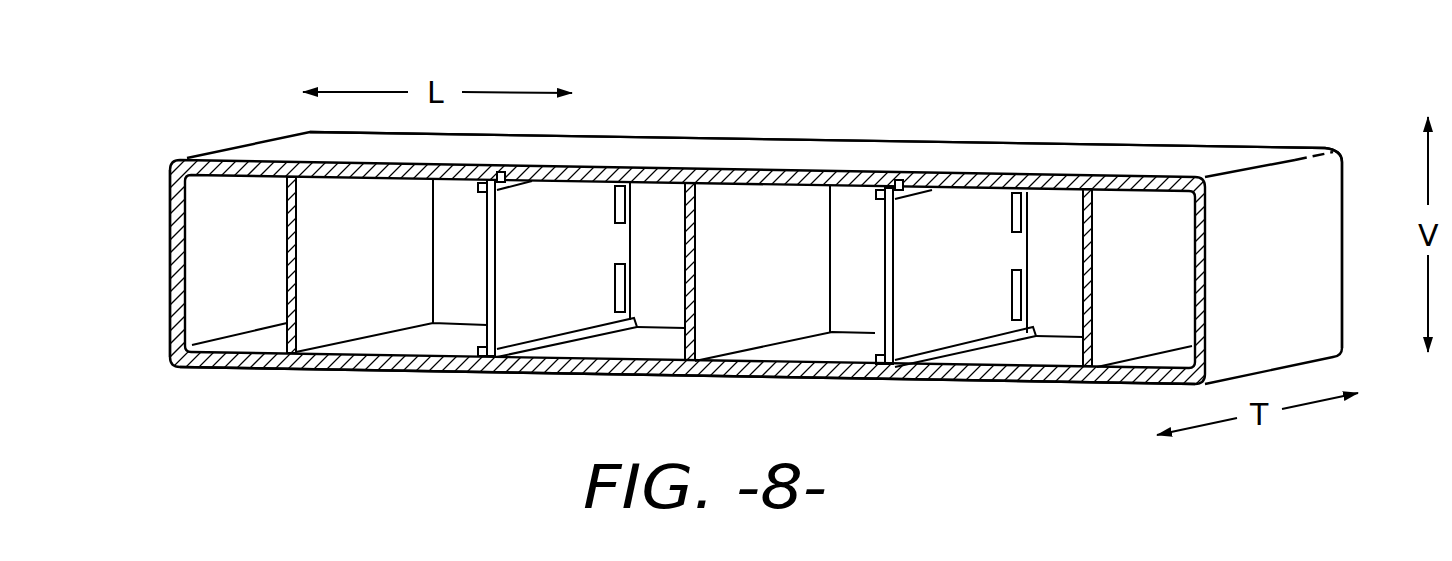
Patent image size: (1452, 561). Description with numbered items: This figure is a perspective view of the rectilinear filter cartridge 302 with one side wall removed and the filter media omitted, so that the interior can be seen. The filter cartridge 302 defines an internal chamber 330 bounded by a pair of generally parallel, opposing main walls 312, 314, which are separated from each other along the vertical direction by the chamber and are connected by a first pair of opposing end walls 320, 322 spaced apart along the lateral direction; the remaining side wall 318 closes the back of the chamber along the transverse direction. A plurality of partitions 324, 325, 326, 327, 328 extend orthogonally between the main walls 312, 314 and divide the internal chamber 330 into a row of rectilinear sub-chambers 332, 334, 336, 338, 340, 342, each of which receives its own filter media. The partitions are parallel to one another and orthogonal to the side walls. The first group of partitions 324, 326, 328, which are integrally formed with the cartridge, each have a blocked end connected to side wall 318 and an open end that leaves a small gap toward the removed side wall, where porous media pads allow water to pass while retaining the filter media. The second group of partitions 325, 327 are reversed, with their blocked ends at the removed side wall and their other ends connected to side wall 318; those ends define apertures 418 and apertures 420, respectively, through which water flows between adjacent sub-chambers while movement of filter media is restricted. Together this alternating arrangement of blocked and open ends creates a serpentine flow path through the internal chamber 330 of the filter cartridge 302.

The filter cartridge 302 is at (1205, 123).
The main wall 312 is at (820, 138).
The main wall 314 is at (933, 383).
The side wall 318 is at (1345, 181).
The end wall 320 is at (170, 245).
The end wall 322 is at (1320, 320).
The partition 324 is at (386, 269).
The partition 325 is at (576, 307).
The partition 326 is at (792, 277).
The partition 327 is at (977, 313).
The partition 328 is at (1171, 288).
The internal chamber 330 is at (718, 304).
The sub-chamber 332 is at (208, 275).
The sub-chamber 334 is at (430, 337).
The sub-chamber 336 is at (613, 346).
The sub-chamber 338 is at (833, 348).
The sub-chamber 340 is at (1035, 346).
The sub-chamber 342 is at (1138, 339).
The apertures 418 is at (603, 281).
The apertures 420 is at (1001, 285).